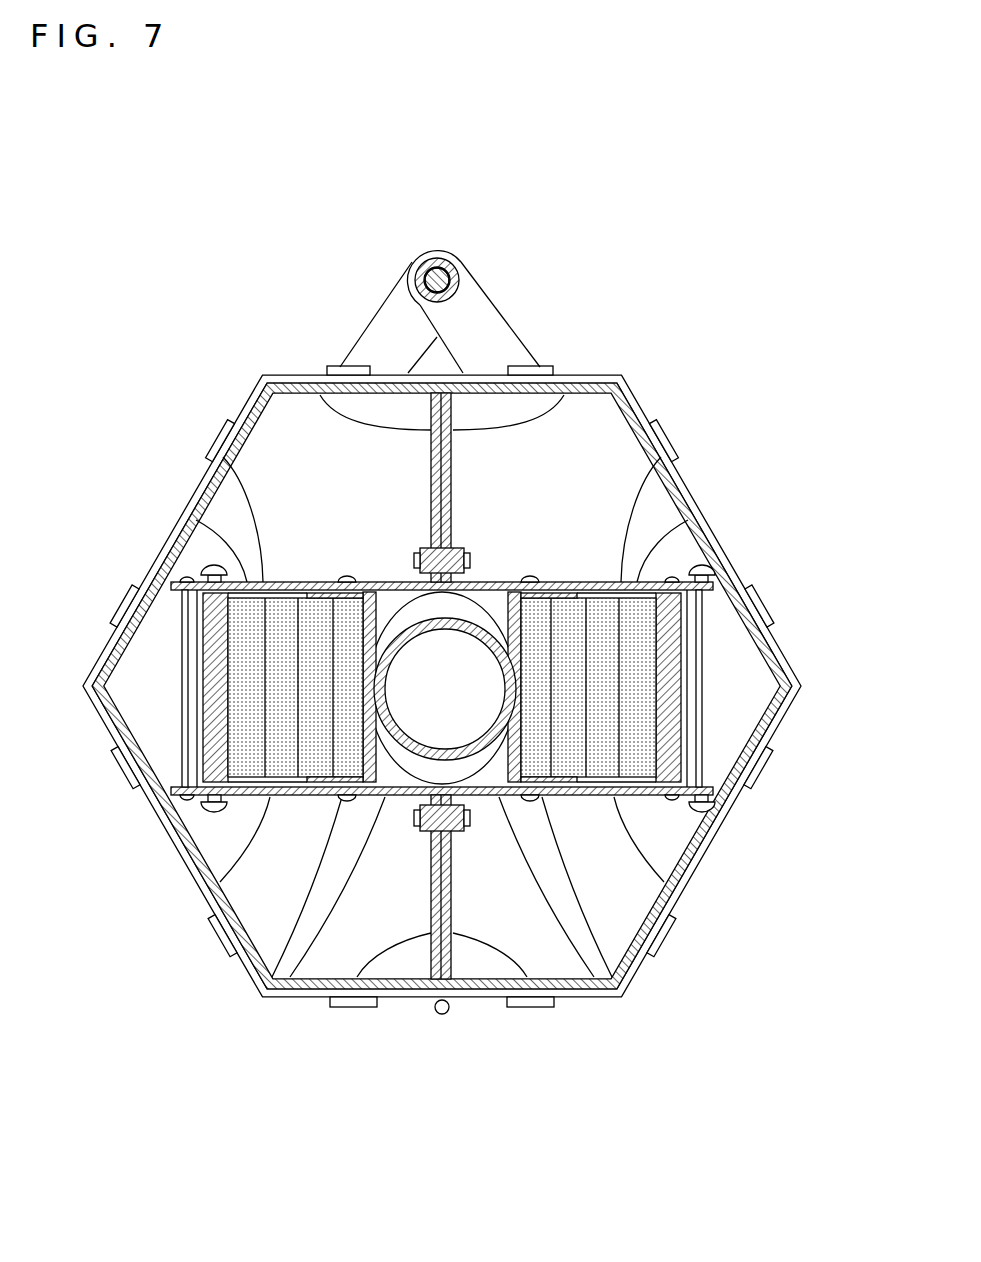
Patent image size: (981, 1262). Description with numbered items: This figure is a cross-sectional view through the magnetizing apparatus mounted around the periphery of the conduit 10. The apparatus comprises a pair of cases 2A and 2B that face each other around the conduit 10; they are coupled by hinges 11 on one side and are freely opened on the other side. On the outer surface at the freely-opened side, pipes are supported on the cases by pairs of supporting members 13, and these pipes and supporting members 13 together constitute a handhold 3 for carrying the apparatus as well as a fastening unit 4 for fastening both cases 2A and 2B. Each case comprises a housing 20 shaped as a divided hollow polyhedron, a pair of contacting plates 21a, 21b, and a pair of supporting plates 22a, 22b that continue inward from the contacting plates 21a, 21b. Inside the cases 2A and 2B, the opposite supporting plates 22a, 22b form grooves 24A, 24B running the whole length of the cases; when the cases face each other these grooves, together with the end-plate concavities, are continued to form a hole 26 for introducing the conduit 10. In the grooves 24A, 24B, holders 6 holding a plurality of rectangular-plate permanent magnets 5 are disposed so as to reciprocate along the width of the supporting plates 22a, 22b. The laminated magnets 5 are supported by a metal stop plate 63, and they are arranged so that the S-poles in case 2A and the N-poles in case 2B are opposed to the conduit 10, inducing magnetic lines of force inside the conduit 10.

The case 2A is at (158, 532).
The case 2B is at (737, 526).
The handhold 3 is at (466, 246).
The fastening unit 4 is at (437, 280).
The permanent magnet 5 is at (275, 997).
The holder 6 is at (249, 967).
The conduit 10 is at (469, 620).
The hinge 11 is at (443, 1014).
The supporting member 13 is at (392, 313).
The housing 20 is at (170, 582).
The contacting plate 21a is at (320, 400).
The contacting plate 21b is at (345, 990).
The supporting plate 22a is at (230, 460).
The supporting plate 22b is at (222, 882).
The groove 24A is at (207, 580).
The groove 24B is at (680, 512).
The hole 26 is at (455, 771).
The stop plate 63 is at (205, 722).